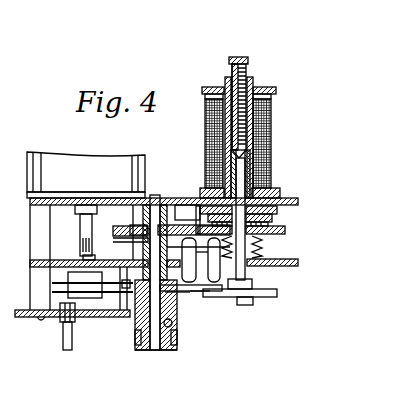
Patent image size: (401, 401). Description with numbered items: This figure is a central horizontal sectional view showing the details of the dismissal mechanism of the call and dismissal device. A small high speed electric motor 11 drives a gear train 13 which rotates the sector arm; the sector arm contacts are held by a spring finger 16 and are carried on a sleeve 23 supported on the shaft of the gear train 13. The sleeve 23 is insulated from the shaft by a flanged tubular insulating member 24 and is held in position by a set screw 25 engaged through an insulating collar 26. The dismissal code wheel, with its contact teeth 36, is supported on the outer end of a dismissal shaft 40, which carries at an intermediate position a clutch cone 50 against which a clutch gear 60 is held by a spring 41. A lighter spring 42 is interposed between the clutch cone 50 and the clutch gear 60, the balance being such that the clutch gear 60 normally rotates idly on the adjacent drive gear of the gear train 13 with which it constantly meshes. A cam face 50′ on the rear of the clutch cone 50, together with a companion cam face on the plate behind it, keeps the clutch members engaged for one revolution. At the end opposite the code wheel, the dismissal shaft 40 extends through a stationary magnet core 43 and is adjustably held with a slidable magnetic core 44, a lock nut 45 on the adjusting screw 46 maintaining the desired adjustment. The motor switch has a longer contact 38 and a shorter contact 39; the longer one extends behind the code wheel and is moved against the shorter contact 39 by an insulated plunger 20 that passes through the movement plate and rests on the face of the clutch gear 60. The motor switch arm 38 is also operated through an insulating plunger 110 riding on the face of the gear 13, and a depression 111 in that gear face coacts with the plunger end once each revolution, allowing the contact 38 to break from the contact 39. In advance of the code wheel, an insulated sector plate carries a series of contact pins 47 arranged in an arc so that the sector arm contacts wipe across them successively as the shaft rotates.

The electric motor 11 is at (118, 160).
The gear train 13 is at (183, 205).
The spring finger 16 is at (135, 338).
The insulated plunger 20 is at (188, 238).
The sleeve 23 is at (178, 306).
The flanged tubular insulating member 24 is at (155, 350).
The set screw 25 is at (195, 296).
The insulating collar 26 is at (172, 325).
The contact teeth 36 is at (266, 297).
The motor switch contact 38 is at (244, 306).
The motor switch contact 39 is at (200, 293).
The dismissal shaft 40 is at (252, 281).
The spring 41 is at (256, 250).
The lighter spring 42 is at (276, 200).
The stationary magnet core 43 is at (246, 165).
The slidable magnetic core 44 is at (250, 84).
The lock nut 45 is at (231, 78).
The adjusting screw 46 is at (54, 318).
The contact pins 47 is at (65, 335).
The clutch cone 50 is at (281, 212).
The cam face 50′ is at (197, 205).
The clutch gear 60 is at (286, 231).
The insulating plunger 110 is at (147, 252).
The depression 111 is at (118, 240).